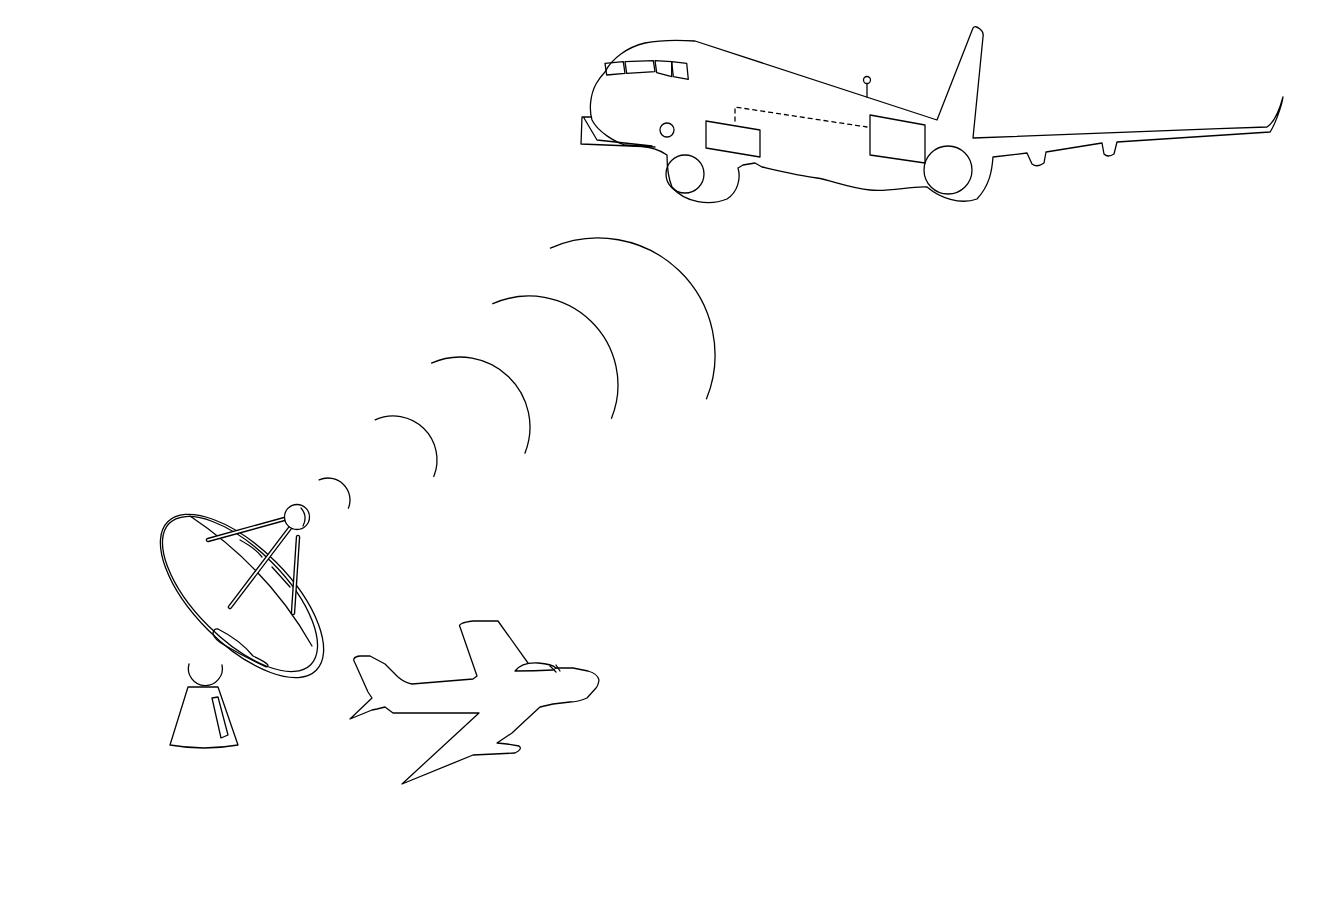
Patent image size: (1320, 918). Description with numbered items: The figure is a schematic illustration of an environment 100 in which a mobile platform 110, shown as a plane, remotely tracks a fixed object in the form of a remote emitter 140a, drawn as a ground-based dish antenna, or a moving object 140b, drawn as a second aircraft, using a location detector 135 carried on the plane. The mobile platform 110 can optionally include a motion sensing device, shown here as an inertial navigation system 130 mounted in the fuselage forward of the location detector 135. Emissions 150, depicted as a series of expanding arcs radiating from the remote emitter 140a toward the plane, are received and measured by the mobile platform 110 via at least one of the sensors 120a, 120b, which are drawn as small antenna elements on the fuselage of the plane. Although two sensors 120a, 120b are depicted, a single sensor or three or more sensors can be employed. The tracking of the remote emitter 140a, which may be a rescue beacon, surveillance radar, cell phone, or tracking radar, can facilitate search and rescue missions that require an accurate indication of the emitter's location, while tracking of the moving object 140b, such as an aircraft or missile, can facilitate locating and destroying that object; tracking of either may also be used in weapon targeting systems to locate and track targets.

The environment 100 is at (196, 134).
The mobile platform 110 is at (973, 230).
The sensor 120a is at (660, 136).
The sensor 120b is at (867, 76).
The inertial navigation system 130 is at (743, 143).
The location detector 135 is at (890, 147).
The remote emitter 140a is at (190, 513).
The moving object 140b is at (537, 662).
The emissions 150 is at (622, 439).